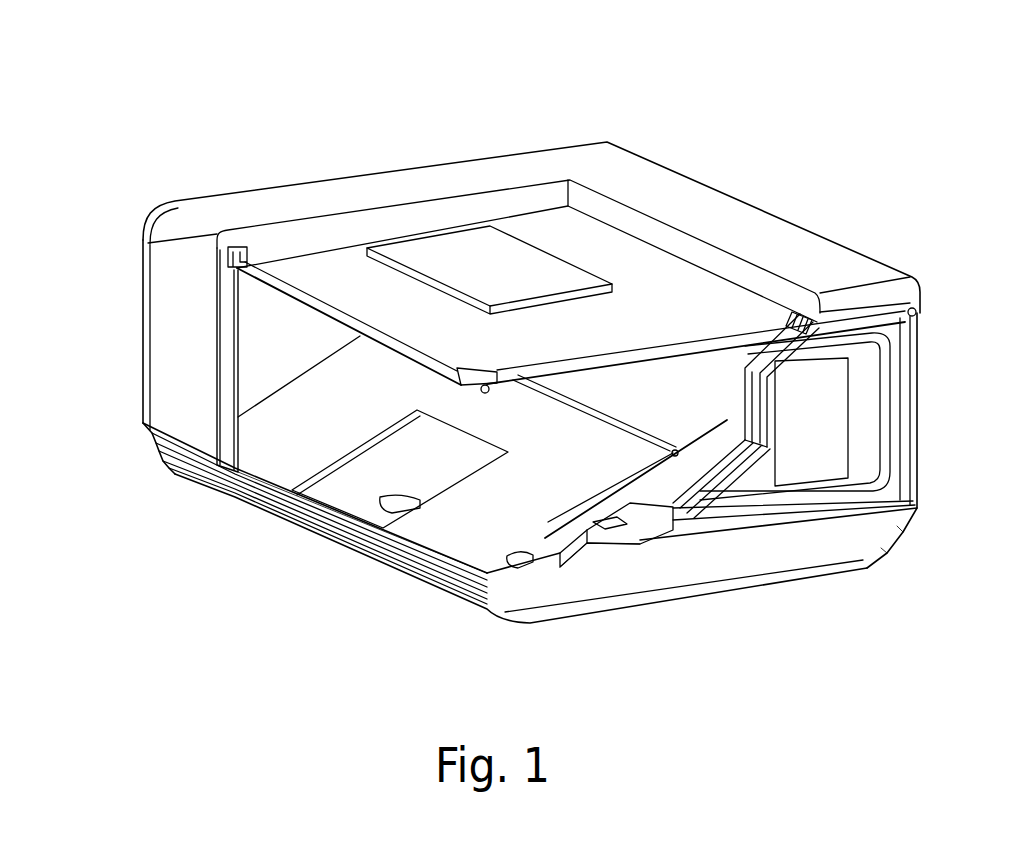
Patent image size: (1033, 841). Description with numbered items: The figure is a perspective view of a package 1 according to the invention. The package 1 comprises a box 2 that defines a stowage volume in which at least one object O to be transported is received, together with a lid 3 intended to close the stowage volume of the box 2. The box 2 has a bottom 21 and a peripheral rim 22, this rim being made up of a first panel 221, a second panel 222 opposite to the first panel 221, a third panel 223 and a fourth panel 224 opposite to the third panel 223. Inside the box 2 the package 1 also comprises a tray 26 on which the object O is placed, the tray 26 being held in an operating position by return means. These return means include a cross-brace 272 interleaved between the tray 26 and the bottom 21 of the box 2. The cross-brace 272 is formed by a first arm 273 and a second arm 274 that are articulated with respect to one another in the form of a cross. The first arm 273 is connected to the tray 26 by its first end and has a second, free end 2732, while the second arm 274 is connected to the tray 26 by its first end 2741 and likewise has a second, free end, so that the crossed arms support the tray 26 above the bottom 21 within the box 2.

The package 1 is at (367, 98).
The object O is at (474, 260).
The lid 3 is at (667, 183).
The tray 26 is at (332, 290).
The third panel 223 is at (263, 352).
The fourth panel 224 is at (160, 385).
The bottom 21 is at (355, 482).
The first end of the second arm 2741 is at (360, 484).
The second arm 274 is at (477, 396).
The second, free end of the first arm 2732 is at (452, 572).
The peripheral rim 22 is at (608, 576).
The cross-brace 272 is at (640, 485).
The first panel 221 is at (760, 562).
The box 2 is at (903, 558).
The first arm 273 is at (682, 360).
The second panel 222 is at (727, 407).